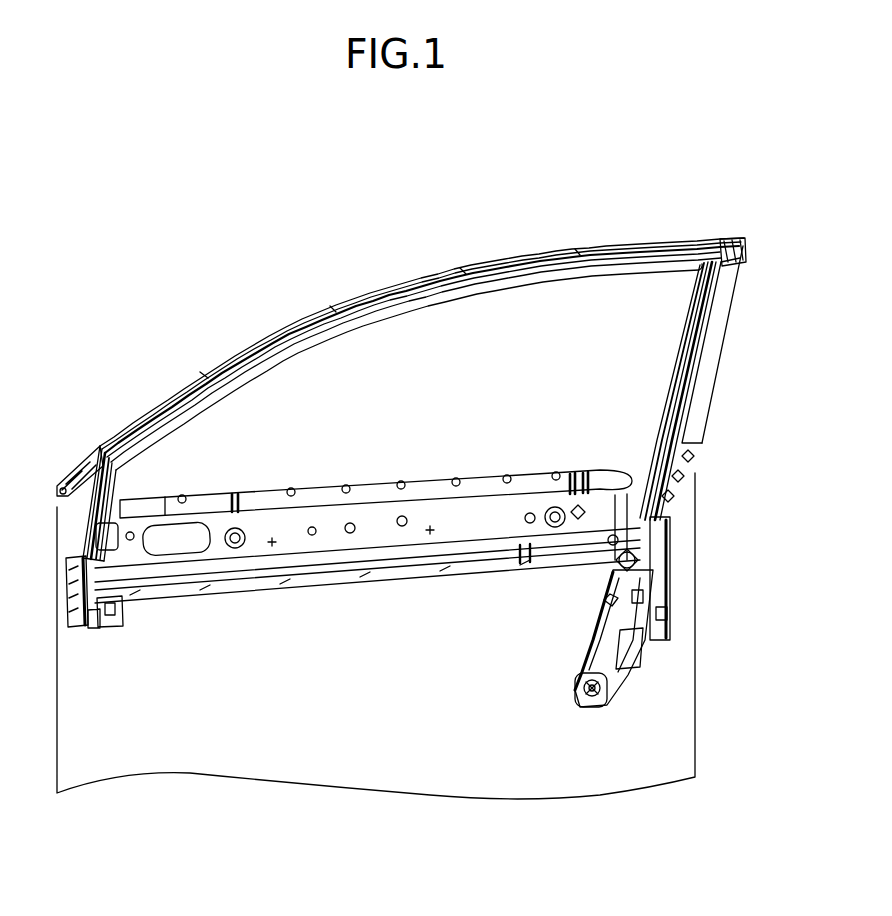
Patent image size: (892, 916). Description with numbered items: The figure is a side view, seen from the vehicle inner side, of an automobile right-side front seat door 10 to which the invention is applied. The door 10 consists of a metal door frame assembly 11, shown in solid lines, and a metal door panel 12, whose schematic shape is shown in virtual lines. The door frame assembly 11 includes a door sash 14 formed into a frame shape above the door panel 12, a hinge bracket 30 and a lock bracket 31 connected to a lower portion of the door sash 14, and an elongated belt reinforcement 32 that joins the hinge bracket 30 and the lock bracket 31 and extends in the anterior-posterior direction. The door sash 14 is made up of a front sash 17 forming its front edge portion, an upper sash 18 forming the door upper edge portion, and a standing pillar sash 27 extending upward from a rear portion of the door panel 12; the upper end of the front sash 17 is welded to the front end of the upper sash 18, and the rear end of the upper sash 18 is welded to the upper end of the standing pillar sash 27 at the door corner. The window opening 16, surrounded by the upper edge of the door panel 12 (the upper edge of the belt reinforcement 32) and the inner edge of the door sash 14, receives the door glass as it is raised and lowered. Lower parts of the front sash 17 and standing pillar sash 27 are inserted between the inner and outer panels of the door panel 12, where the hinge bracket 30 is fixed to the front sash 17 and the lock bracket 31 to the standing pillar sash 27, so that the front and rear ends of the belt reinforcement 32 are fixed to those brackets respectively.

The front seat door 10 is at (153, 286).
The door frame assembly 11 is at (677, 205).
The door panel 12 is at (660, 725).
The door sash 14 is at (360, 296).
The window opening 16 is at (462, 372).
The front sash 17 is at (113, 485).
The upper sash 18 is at (563, 266).
The standing pillar sash 27 is at (712, 356).
The hinge bracket 30 is at (73, 628).
The lock bracket 31 is at (614, 613).
The belt reinforcement 32 is at (371, 542).